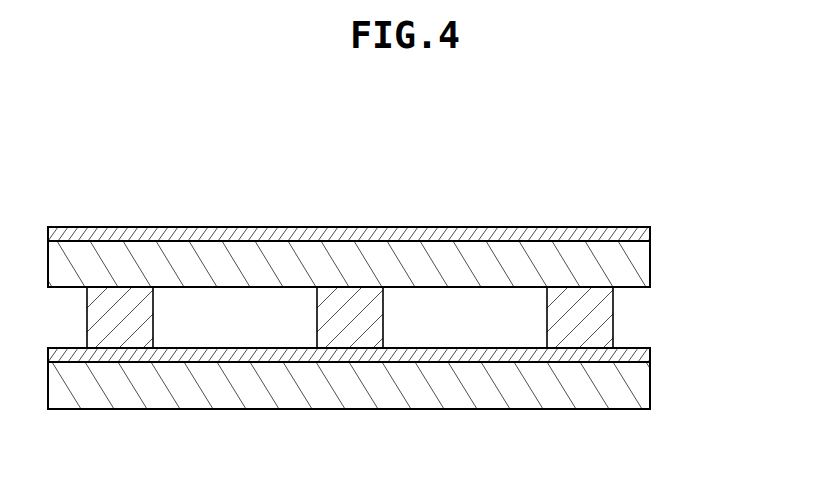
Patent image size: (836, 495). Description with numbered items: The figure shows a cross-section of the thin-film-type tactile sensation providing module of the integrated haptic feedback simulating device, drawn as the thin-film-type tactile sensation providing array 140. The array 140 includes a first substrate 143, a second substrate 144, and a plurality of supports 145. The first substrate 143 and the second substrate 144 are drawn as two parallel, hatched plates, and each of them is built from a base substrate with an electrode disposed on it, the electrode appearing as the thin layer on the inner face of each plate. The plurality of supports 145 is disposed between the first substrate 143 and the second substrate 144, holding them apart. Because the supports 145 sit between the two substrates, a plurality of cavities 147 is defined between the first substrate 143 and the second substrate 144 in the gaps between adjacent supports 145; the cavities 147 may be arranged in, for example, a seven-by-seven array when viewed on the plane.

The thin-film-type tactile sensation providing array 140 is at (89, 190).
The first substrate 143 is at (399, 376).
The second substrate 144 is at (402, 256).
The supports 145 is at (598, 313).
The cavities 147 is at (227, 319).